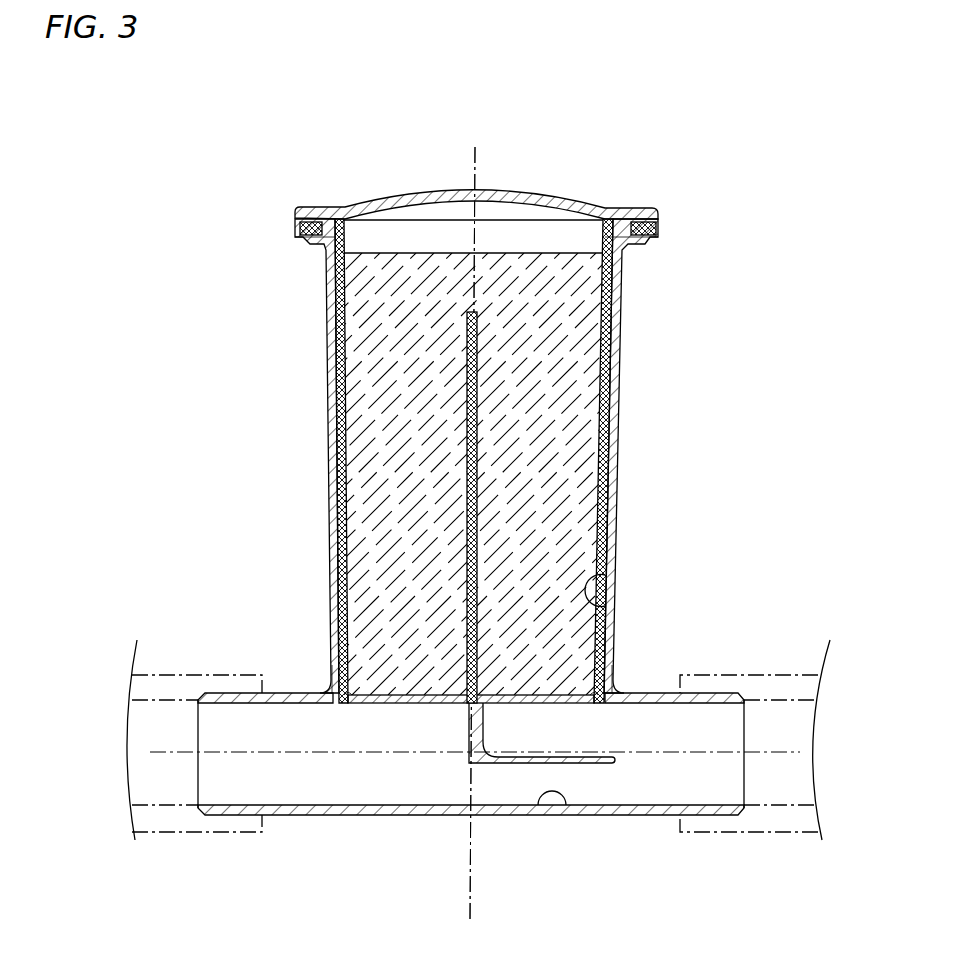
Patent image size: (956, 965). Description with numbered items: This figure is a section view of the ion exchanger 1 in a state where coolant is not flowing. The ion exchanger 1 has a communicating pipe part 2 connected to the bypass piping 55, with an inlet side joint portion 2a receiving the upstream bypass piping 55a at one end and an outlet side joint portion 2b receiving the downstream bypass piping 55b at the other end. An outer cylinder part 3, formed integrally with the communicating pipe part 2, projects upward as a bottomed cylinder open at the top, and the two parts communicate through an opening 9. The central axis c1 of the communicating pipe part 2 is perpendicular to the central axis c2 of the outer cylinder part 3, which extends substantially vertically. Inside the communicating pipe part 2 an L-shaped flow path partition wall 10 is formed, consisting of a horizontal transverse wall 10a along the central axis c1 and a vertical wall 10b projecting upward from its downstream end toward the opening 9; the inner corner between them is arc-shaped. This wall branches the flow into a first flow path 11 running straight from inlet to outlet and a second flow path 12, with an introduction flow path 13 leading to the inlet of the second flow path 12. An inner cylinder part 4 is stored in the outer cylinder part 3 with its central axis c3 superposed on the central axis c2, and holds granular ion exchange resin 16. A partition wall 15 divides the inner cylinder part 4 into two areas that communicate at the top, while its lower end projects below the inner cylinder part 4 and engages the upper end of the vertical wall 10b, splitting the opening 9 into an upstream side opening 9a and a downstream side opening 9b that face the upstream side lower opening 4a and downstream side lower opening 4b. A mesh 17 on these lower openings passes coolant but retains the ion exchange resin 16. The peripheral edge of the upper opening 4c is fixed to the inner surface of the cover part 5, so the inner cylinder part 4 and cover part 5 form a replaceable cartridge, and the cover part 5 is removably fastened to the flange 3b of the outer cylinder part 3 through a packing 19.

The ion exchanger 1 is at (748, 197).
The communicating pipe part 2 is at (471, 792).
The inlet side joint portion 2a is at (708, 816).
The outlet side joint portion 2b is at (230, 816).
The outer cylinder part 3 is at (480, 456).
The flange 3b is at (305, 244).
The inner cylinder part 4 is at (472, 423).
The upstream side lower opening 4a is at (612, 672).
The downstream side lower opening 4b is at (333, 672).
The upper opening 4c is at (422, 218).
The cover part 5 is at (549, 196).
The opening 9 is at (478, 722).
The upstream side opening 9a is at (600, 705).
The downstream side opening 9b is at (344, 705).
The flow path partition wall 10 is at (531, 786).
The transverse wall 10a is at (590, 764).
The vertical wall 10b is at (469, 720).
The first flow path 11 is at (548, 805).
The second flow path 12 is at (603, 575).
The introduction flow path 13 is at (543, 740).
The partition wall 15 is at (479, 446).
The ion exchange resin 16 is at (393, 422).
The mesh 17 is at (398, 705).
The packing 19 is at (305, 221).
The bypass piping 55 is at (478, 717).
The upstream bypass piping 55a is at (750, 672).
The downstream bypass piping 55b is at (200, 672).
The central axis c1 is at (262, 753).
The central axis c2 is at (413, 533).
The central axis c3 is at (470, 878).